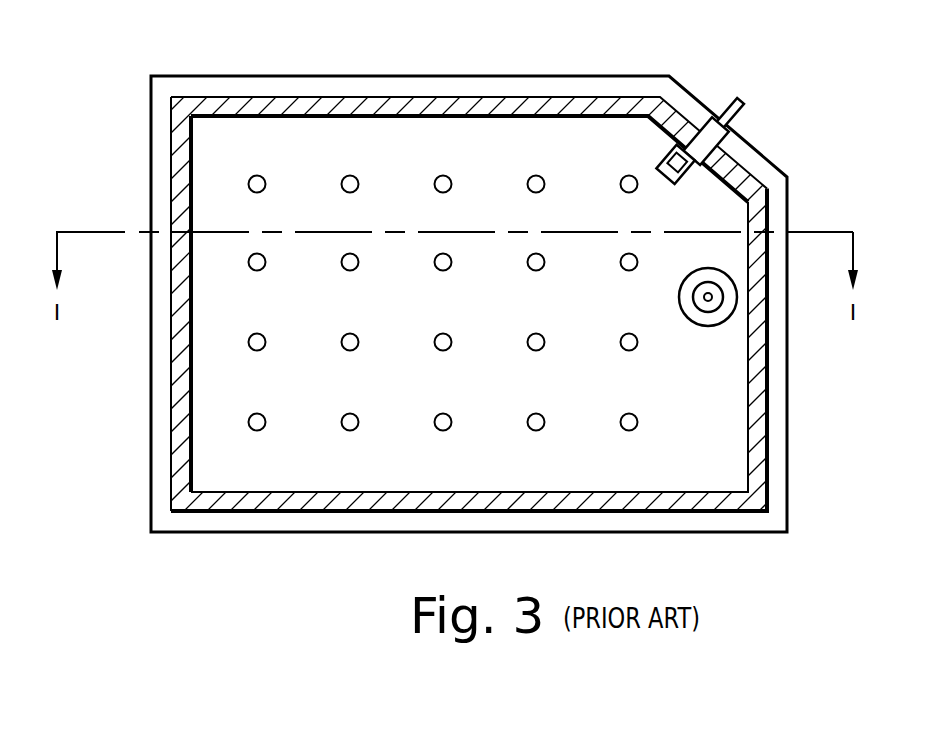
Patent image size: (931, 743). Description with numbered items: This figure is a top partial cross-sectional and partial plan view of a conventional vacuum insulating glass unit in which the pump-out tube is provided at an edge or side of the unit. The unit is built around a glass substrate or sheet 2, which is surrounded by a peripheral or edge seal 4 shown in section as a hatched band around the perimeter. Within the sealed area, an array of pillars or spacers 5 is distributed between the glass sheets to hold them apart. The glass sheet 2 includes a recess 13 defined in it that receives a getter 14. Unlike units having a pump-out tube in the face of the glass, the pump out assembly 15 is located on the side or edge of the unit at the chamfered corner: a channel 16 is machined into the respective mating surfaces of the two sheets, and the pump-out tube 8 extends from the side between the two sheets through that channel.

The glass substrate 2 is at (520, 522).
The peripheral or edge seal 4 is at (370, 108).
The pillars/spacers 5 is at (259, 177).
The pump-out tube 8 is at (710, 126).
The recess 13 is at (698, 317).
The getter 14 is at (697, 295).
The pump out assembly 15 is at (760, 125).
The channel 16 is at (680, 176).